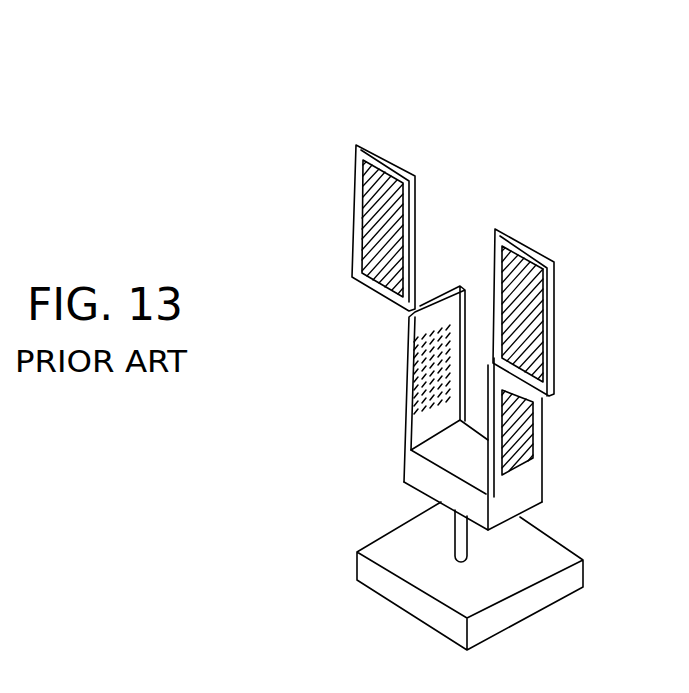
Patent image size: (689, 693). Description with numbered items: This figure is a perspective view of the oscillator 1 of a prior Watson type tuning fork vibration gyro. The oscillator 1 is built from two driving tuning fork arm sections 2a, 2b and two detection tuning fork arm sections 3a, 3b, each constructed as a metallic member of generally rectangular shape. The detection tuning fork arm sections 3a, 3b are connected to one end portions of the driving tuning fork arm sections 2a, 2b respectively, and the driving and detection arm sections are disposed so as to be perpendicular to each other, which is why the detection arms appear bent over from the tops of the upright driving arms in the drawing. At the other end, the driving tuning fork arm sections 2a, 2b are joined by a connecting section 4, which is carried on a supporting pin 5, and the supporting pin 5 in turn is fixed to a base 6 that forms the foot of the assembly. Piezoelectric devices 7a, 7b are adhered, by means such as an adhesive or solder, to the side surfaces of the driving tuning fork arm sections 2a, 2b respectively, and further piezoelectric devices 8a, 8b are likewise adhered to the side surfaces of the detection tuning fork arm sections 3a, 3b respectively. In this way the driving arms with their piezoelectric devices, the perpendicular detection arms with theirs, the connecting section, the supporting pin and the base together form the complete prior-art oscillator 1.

The oscillator 1 is at (288, 136).
The driving tuning fork arm section 2a is at (420, 448).
The driving tuning fork arm section 2b is at (527, 474).
The detection tuning fork arm section 3a is at (383, 157).
The detection tuning fork arm section 3b is at (523, 245).
The connecting section 4 is at (435, 490).
The supporting pin 5 is at (463, 533).
The base 6 is at (433, 577).
The piezoelectric device 7a is at (428, 372).
The piezoelectric device 7b is at (535, 424).
The piezoelectric device 8a is at (378, 237).
The piezoelectric device 8b is at (523, 312).